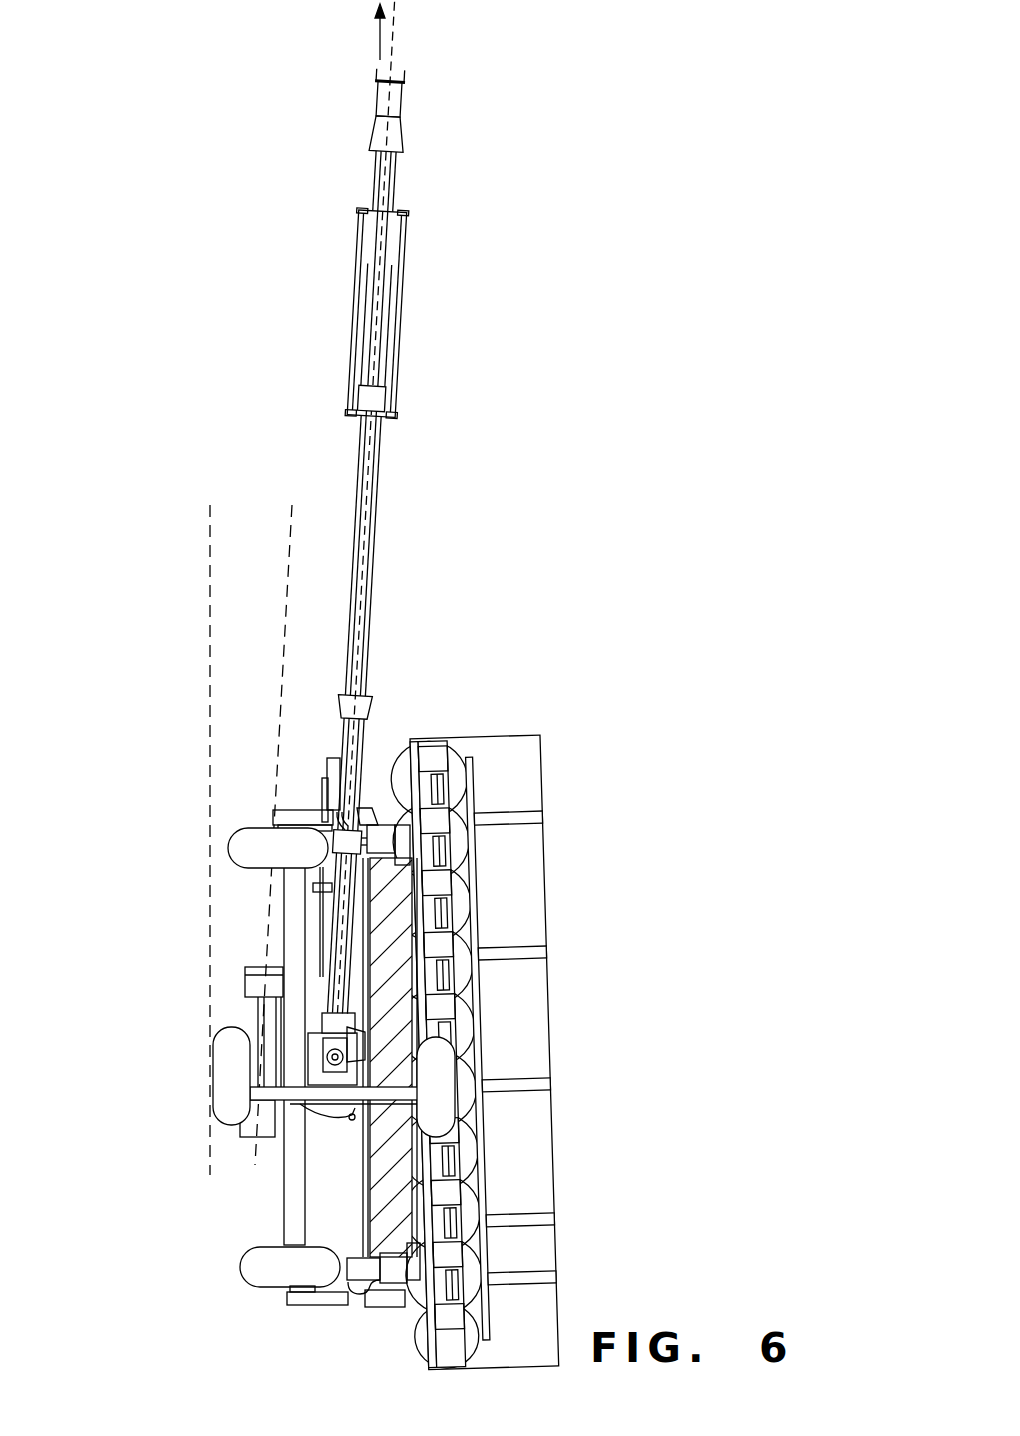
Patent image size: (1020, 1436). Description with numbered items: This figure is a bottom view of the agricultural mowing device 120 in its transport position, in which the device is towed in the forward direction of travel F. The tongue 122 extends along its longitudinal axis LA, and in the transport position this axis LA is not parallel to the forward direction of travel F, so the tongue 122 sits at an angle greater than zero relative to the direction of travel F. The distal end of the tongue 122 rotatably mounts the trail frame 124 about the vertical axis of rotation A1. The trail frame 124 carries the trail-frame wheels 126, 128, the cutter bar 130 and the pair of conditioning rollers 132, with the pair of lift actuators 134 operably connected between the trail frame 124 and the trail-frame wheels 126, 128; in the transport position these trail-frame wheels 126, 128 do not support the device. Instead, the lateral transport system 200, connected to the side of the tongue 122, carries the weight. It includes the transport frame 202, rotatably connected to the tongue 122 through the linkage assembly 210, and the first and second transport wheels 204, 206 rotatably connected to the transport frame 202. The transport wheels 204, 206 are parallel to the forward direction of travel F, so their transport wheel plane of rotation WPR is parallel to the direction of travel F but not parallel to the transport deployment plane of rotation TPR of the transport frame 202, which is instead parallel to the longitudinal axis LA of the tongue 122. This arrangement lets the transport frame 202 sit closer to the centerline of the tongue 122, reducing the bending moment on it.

The agricultural mowing device 120 is at (535, 1052).
The tongue 122 is at (396, 508).
The trail frame 124 is at (280, 1194).
The trail-frame wheel 126 is at (247, 1278).
The trail-frame wheel 128 is at (242, 852).
The cutter bar 130 is at (437, 1054).
The conditioning rollers 132 is at (372, 1213).
The lift actuators 134 is at (301, 810).
The lateral transport system 200 is at (355, 1104).
The transport frame 202 is at (352, 1120).
The first transport wheel 204 is at (456, 1105).
The second transport wheel 206 is at (226, 1122).
The linkage assembly 210 is at (224, 1020).
The axis of rotation A1 is at (328, 1052).
The longitudinal axis LA is at (372, 398).
The transport deployment plane of rotation TPR is at (279, 590).
The transport wheel plane of rotation WPR is at (208, 641).
The forward direction of travel F is at (368, 32).